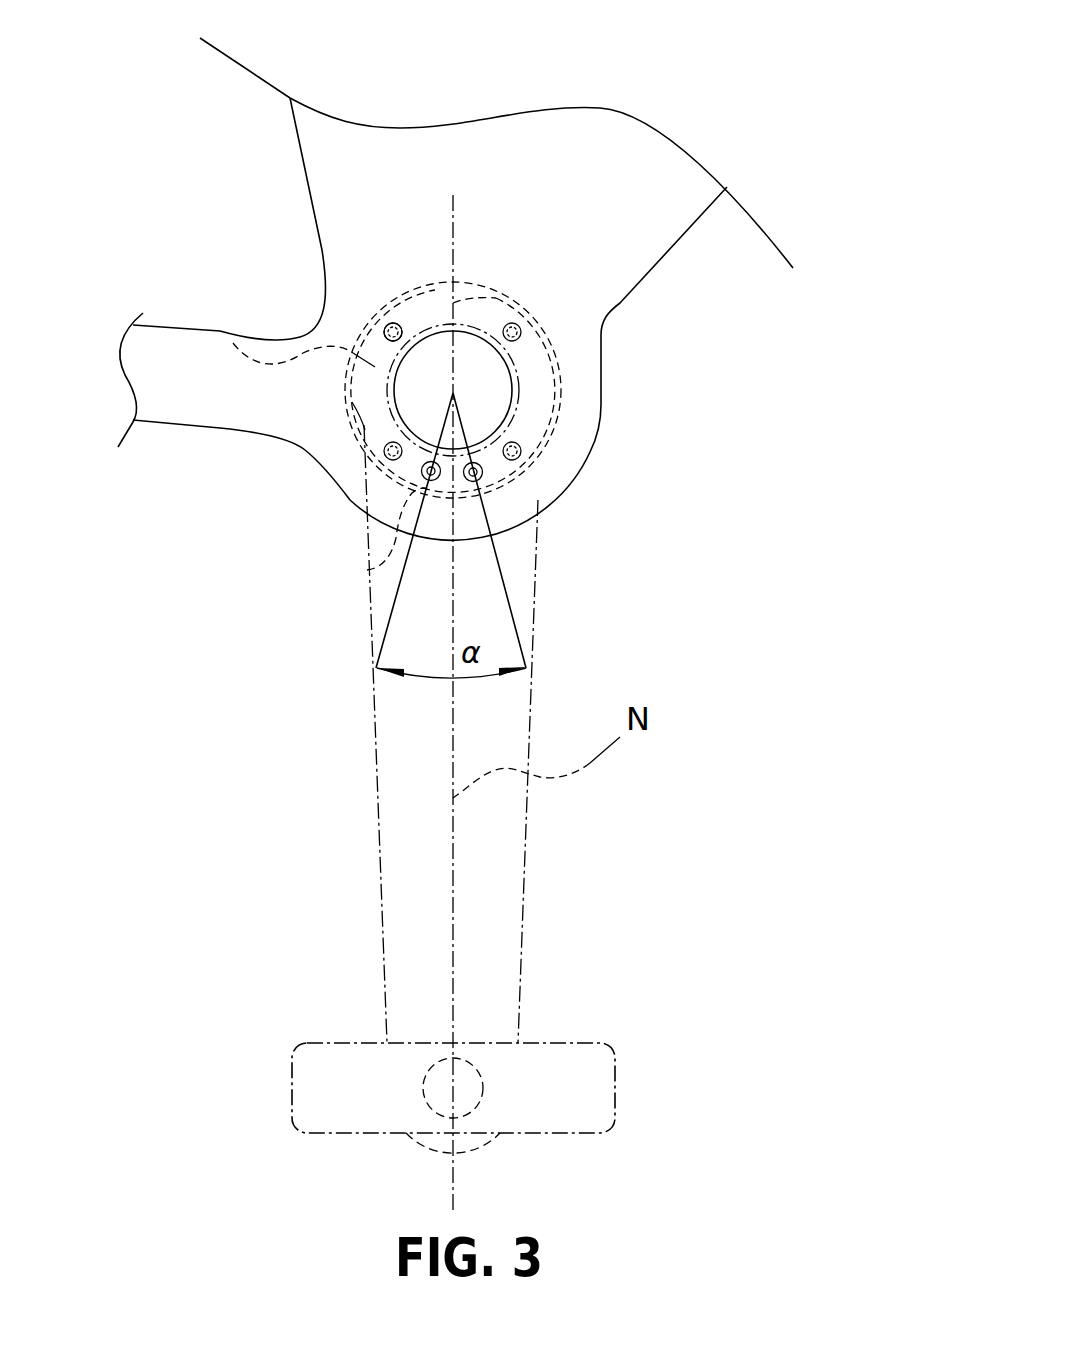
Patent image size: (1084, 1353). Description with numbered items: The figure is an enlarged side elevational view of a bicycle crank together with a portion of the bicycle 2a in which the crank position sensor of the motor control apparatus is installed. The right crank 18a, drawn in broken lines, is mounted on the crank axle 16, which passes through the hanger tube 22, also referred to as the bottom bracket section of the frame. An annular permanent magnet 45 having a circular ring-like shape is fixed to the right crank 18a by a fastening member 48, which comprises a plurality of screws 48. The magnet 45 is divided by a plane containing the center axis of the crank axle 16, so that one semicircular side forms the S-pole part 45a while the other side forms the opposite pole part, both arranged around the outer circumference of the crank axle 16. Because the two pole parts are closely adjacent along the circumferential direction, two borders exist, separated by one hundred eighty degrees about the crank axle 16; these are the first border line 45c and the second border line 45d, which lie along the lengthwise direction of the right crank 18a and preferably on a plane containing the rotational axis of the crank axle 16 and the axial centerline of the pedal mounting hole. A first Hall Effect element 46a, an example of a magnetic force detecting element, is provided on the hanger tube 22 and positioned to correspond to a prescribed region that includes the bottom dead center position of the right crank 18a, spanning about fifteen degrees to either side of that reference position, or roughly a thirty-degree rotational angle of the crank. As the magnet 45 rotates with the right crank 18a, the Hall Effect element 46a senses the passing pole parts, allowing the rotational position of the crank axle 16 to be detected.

The body 2a is at (277, 152).
The crank axle 16 is at (478, 367).
The right crank 18a is at (537, 607).
The hanger tube 22 is at (603, 405).
The permanent magnet 45 is at (377, 317).
The S-pole part 45a is at (233, 343).
The first border line 45c is at (367, 570).
The second border line 45d is at (497, 293).
The first Hall Effect element 46a is at (421, 471).
The fastening member 48 is at (393, 323).